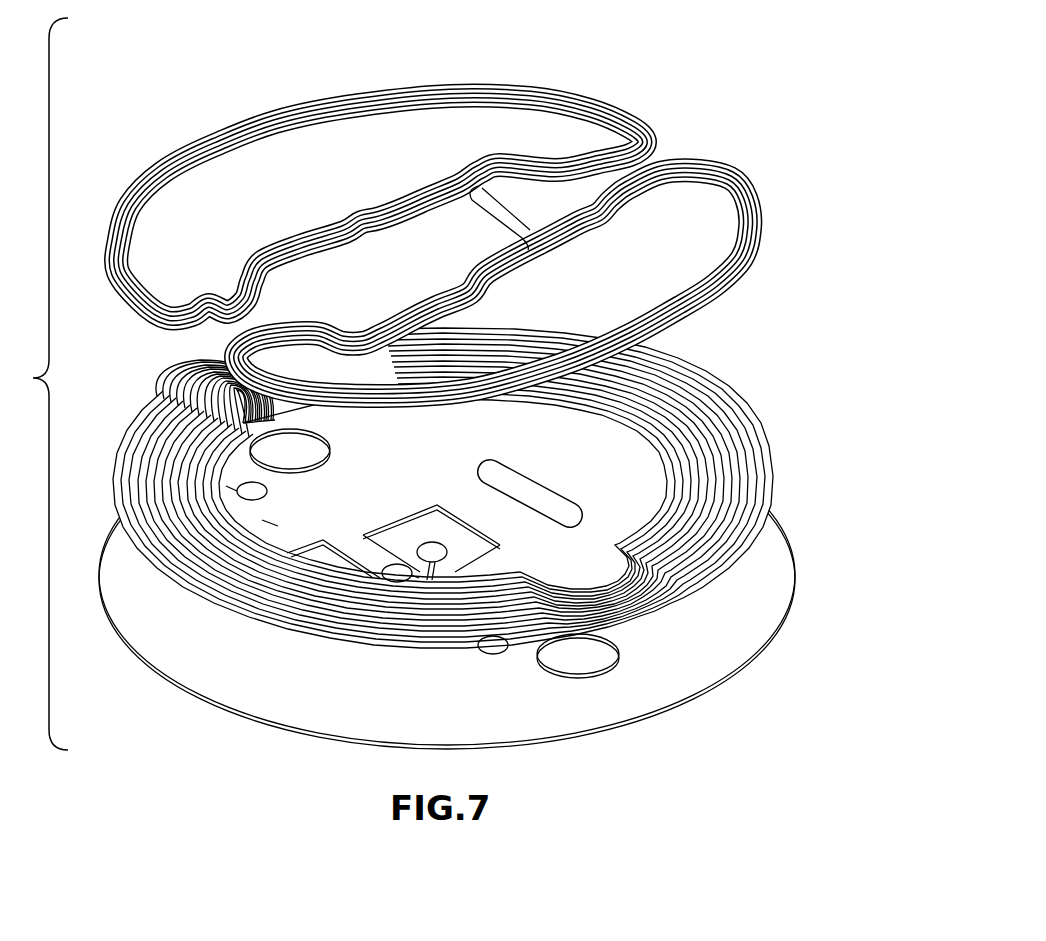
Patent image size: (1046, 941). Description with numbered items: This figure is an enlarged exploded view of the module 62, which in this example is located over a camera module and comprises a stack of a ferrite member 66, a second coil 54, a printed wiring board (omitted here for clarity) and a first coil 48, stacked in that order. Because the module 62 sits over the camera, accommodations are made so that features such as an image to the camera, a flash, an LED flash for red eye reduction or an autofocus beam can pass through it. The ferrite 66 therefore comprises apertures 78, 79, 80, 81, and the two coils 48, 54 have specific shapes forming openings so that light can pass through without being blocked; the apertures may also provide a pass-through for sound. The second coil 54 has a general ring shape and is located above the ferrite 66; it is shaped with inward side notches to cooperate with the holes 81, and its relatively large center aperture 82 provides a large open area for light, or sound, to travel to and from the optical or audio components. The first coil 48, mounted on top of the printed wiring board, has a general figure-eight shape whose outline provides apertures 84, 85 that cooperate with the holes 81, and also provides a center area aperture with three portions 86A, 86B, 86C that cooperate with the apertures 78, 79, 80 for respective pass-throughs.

The module 62 is at (672, 48).
The first coil 48 is at (454, 211).
The second coil 54 is at (120, 468).
The ferrite member 66 is at (238, 700).
The aperture 78 is at (465, 545).
The aperture 79 is at (557, 497).
The aperture 80 is at (330, 560).
The holes 81 is at (280, 452).
The center aperture 82 is at (270, 523).
The aperture 84 is at (708, 245).
The aperture 85 is at (242, 160).
The center area aperture portion 86A is at (460, 222).
The center area aperture portion 86B is at (556, 210).
The center area aperture portion 86C is at (330, 260).